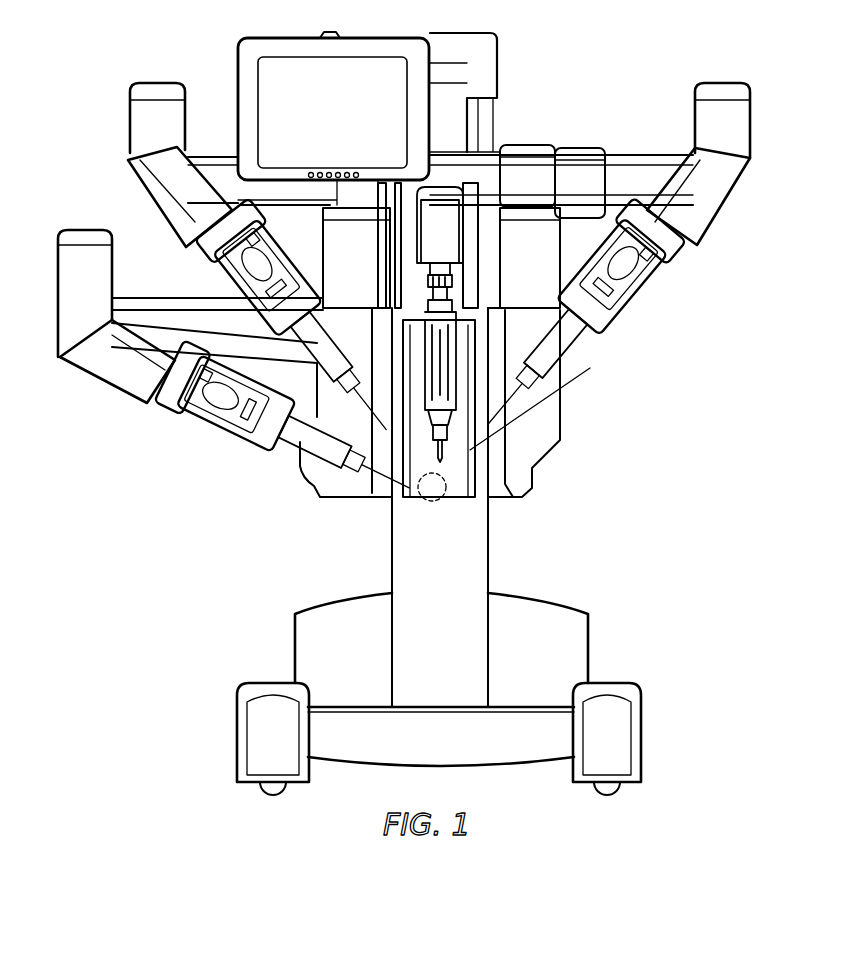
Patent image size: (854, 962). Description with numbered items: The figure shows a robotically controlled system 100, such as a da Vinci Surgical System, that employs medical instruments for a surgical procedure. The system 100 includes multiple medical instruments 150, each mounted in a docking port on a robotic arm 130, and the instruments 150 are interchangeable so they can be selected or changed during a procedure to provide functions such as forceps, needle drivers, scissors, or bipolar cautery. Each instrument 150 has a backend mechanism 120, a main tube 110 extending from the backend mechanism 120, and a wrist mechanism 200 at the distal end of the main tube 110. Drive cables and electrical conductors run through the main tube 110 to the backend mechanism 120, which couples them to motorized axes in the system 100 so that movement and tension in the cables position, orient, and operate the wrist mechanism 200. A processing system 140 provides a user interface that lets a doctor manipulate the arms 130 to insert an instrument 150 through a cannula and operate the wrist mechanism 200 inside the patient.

The robotically controlled system 100 is at (63, 74).
The main tube 110 is at (289, 437).
The backend mechanism 120 is at (222, 400).
The robotic arm 130 is at (140, 200).
The processing system 140 is at (348, 128).
The medical instrument 150 is at (614, 366).
The wrist mechanism 200 is at (436, 500).